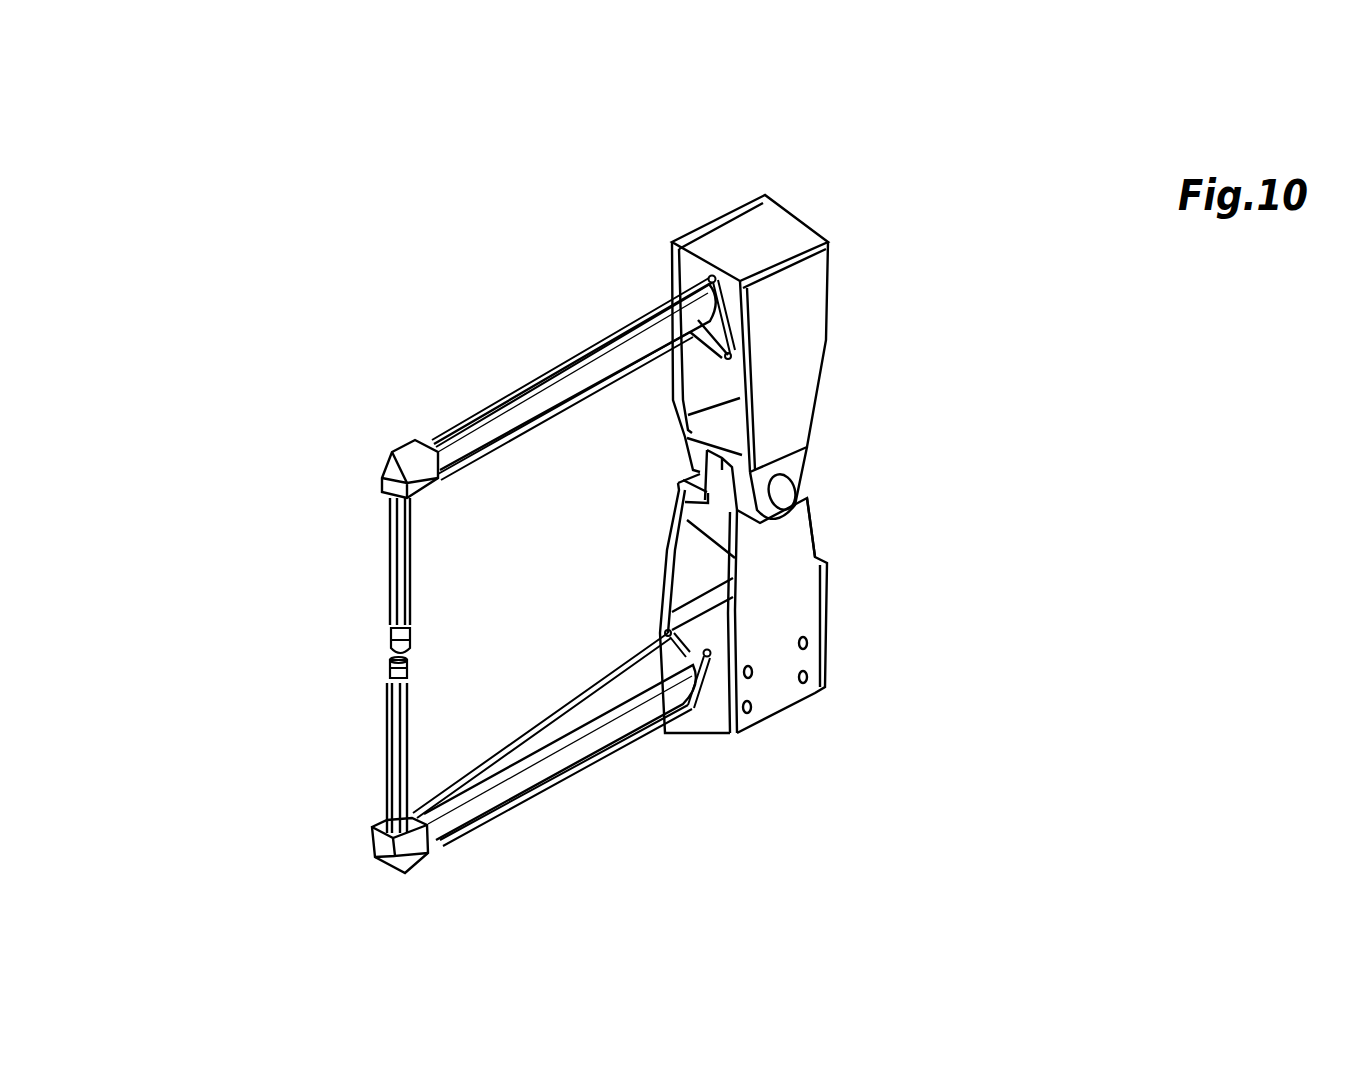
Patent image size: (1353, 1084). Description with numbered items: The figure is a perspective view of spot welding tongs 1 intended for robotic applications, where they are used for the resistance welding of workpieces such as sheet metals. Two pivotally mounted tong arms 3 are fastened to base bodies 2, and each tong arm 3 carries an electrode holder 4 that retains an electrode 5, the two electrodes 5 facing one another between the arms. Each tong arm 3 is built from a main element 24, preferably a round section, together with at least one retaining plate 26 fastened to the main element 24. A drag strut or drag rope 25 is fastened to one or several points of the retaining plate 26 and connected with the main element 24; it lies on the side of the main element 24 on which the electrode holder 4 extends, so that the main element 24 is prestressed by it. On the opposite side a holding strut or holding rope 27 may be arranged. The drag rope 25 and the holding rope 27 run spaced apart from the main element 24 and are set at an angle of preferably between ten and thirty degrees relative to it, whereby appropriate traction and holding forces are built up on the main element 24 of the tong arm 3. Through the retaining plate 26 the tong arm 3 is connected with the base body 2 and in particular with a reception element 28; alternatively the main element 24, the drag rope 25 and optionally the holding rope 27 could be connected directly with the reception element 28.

The spot welding tongs 1 is at (298, 267).
The base body 2 is at (790, 388).
The tong arm 3 is at (645, 212).
The electrode holder 4 is at (405, 530).
The electrode 5 is at (393, 650).
The main element 24 is at (630, 345).
The drag strut or drag rope 25 is at (558, 418).
The retaining plate 26 is at (715, 283).
The holding strut or holding rope 27 is at (468, 420).
The reception element 28 is at (770, 237).